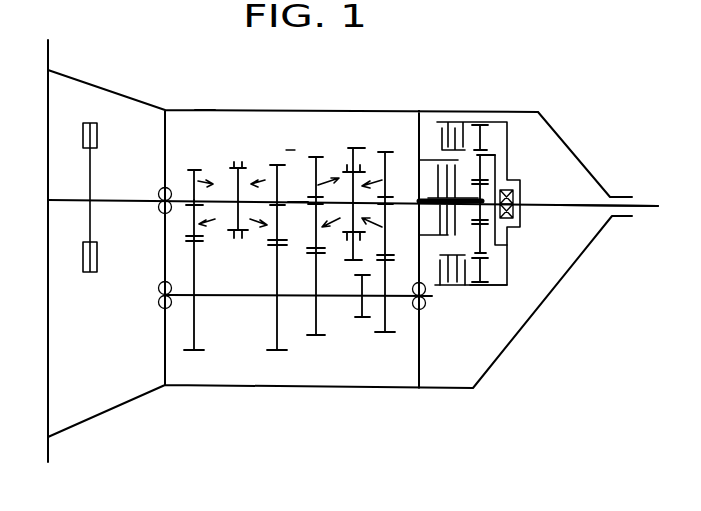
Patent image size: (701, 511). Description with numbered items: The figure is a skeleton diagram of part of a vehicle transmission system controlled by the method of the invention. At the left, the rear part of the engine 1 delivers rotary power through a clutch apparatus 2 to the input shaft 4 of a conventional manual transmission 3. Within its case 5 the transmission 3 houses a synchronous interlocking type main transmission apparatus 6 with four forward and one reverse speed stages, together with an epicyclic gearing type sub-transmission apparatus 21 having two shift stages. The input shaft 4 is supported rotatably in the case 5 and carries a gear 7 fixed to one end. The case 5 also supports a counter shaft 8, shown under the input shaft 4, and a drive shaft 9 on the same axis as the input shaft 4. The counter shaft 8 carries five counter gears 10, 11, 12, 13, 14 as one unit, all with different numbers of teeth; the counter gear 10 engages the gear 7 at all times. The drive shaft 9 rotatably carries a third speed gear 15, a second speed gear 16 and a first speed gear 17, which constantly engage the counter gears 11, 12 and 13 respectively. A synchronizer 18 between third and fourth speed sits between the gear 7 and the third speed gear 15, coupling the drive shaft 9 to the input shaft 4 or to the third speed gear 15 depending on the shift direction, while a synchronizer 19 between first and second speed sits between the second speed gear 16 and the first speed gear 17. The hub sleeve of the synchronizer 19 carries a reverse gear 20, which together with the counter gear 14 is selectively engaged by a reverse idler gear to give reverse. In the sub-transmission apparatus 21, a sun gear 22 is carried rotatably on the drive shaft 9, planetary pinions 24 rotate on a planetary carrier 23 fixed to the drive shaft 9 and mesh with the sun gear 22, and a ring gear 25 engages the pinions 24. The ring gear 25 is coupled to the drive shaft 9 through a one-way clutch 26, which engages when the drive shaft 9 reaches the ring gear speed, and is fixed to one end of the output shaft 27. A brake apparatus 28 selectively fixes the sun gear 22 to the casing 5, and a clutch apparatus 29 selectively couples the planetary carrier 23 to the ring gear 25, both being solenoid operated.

The engine rear part 1 is at (333, 251).
The clutch apparatus 2 is at (121, 92).
The manual transmission 3 is at (310, 91).
The input shaft 4 is at (176, 192).
The case 5 is at (203, 110).
The main transmission apparatus 6 is at (290, 152).
The gear 7 is at (194, 168).
The counter shaft 8 is at (232, 297).
The drive shaft 9 is at (299, 200).
The counter gear 10 is at (196, 274).
The counter gear 11 is at (279, 277).
The counter gear 12 is at (319, 274).
The counter gear 13 is at (387, 285).
The counter gear 14 is at (359, 313).
The third speed gear 15 is at (277, 164).
The second speed gear 16 is at (316, 157).
The first speed gear 17 is at (390, 152).
The synchronizer between third speed and fourth speed 18 is at (238, 164).
The synchronizer between first speed and second speed 19 is at (352, 147).
The reverse gear 20 is at (358, 148).
The sub-transmission apparatus 21 is at (463, 122).
The sun gear 22 is at (485, 186).
The planetary carrier 23 is at (507, 246).
The planetary pinions 24 is at (485, 140).
The ring gear 25 is at (507, 287).
The one-way clutch 26 is at (513, 200).
The output shaft 27 is at (577, 204).
The brake apparatus 28 is at (430, 233).
The clutch apparatus 29 is at (457, 287).